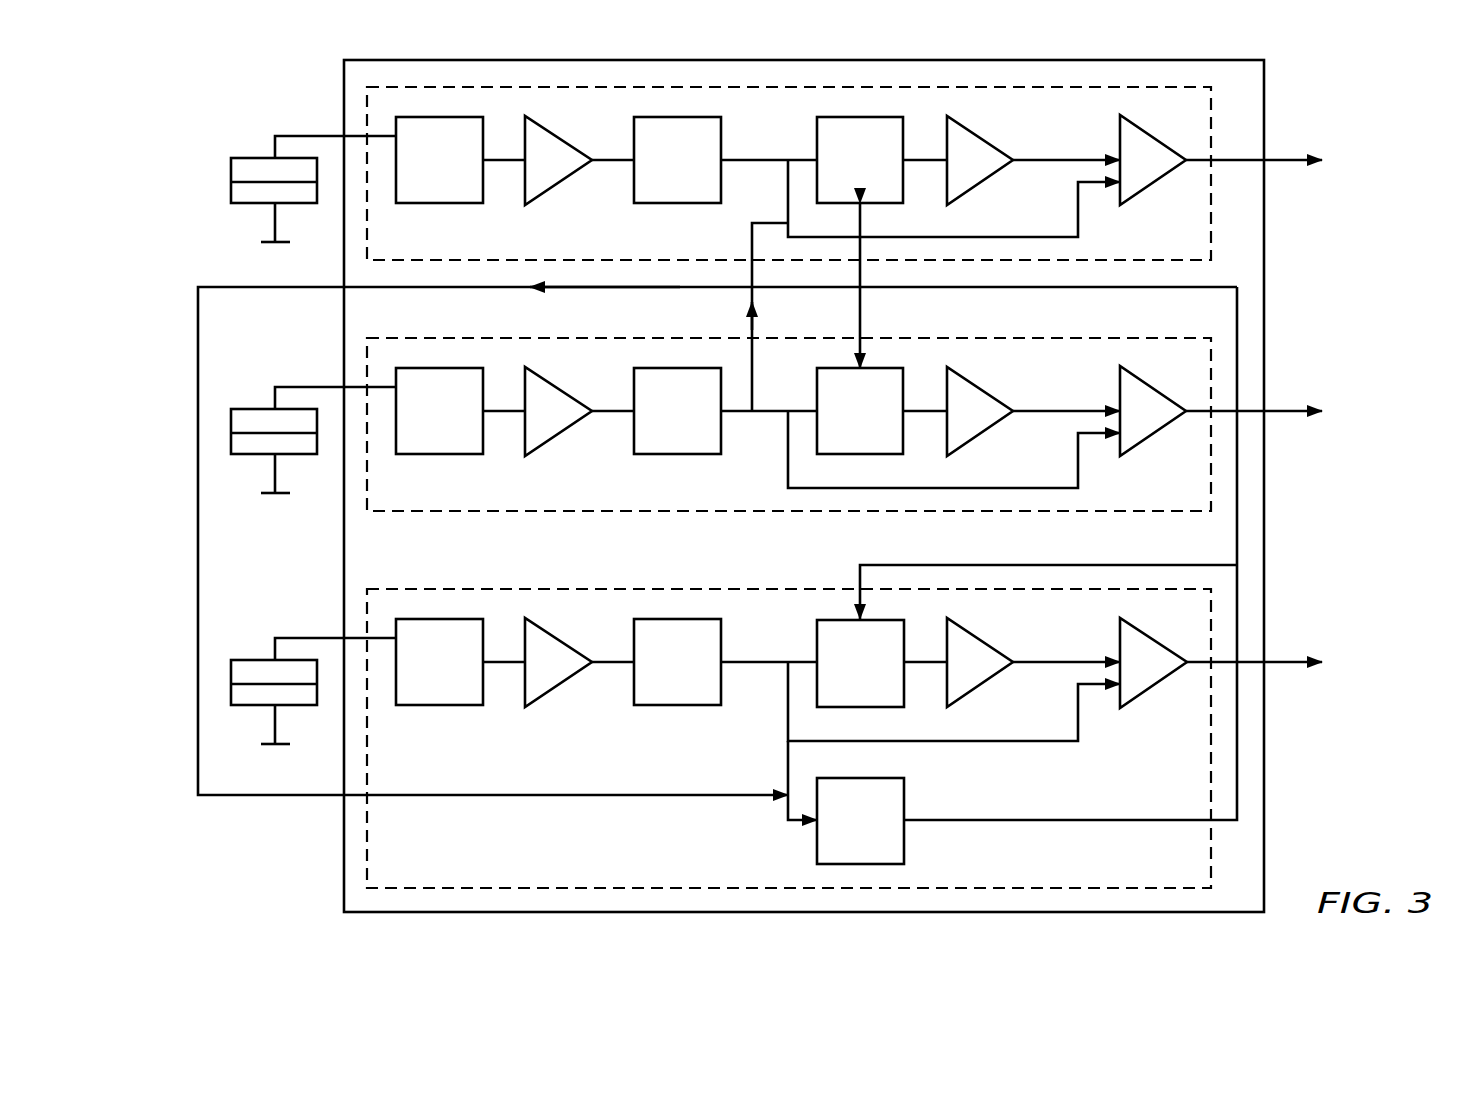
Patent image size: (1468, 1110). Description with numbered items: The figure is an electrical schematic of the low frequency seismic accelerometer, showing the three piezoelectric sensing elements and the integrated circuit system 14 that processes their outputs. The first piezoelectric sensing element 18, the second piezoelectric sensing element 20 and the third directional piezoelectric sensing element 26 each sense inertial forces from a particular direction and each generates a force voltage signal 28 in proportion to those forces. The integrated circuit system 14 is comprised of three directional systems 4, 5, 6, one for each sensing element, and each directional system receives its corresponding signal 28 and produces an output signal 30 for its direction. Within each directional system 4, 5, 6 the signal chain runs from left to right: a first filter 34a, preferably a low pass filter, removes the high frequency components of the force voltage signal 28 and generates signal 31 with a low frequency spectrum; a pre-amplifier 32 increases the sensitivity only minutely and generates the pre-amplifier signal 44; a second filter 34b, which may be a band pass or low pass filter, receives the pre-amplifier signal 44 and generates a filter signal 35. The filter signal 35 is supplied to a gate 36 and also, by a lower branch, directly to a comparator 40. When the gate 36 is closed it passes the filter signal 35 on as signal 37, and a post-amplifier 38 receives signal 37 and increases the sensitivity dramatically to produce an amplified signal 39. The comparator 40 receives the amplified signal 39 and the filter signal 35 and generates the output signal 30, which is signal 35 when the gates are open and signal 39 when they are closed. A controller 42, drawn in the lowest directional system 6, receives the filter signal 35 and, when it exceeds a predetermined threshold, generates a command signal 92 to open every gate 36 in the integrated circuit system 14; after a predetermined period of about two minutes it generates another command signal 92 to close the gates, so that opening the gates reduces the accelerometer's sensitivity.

The integrated circuit system 14 is at (960, 58).
The command signal 92 is at (1072, 288).
The directional system 4 is at (789, 265).
The directional system 5 is at (612, 336).
The directional system 6 is at (563, 587).
The first piezoelectric sensing element 18 is at (250, 203).
The second piezoelectric sensing element 20 is at (250, 454).
The third directional piezoelectric sensing element 26 is at (250, 705).
The force voltage signal 28 is at (320, 136).
The signal 31 is at (503, 160).
The pre-amplifier 32 is at (550, 185).
The first filter 34a is at (448, 203).
The second filter 34b is at (677, 203).
The filter signal 35 is at (761, 160).
The gate 36 is at (880, 203).
The signal 37 is at (920, 160).
The post-amplifier 38 is at (972, 187).
The amplified signal 39 is at (1045, 160).
The comparator 40 is at (1147, 187).
The controller 42 is at (904, 847).
The pre-amplifier signal 44 is at (609, 160).
The output signal 30 is at (1281, 415).